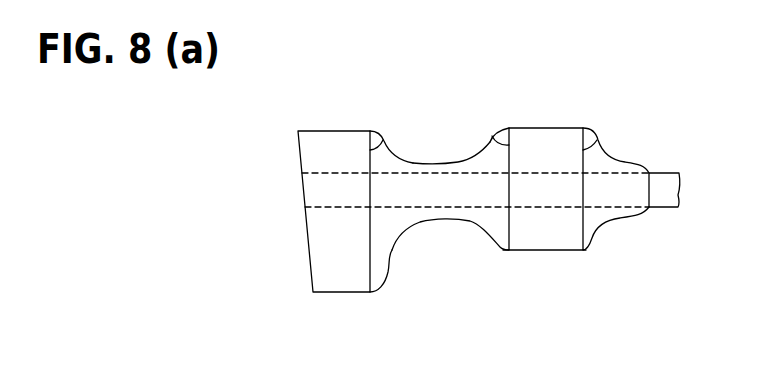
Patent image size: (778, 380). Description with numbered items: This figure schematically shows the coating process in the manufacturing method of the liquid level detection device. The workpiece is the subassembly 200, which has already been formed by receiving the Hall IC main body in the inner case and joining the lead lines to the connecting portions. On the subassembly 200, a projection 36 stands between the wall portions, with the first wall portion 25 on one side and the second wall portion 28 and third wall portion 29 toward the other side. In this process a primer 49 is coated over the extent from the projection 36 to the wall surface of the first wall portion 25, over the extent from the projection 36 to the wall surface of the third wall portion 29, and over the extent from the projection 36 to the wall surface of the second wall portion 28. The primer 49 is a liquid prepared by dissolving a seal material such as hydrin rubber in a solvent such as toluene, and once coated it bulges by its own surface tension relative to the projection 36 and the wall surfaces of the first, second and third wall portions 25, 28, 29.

The subassembly 200 is at (333, 130).
The first wall portion 25 is at (380, 138).
The projection 36 is at (409, 163).
The third wall portion 29 is at (494, 136).
The second wall portion 28 is at (597, 140).
The primer 49 is at (388, 268).